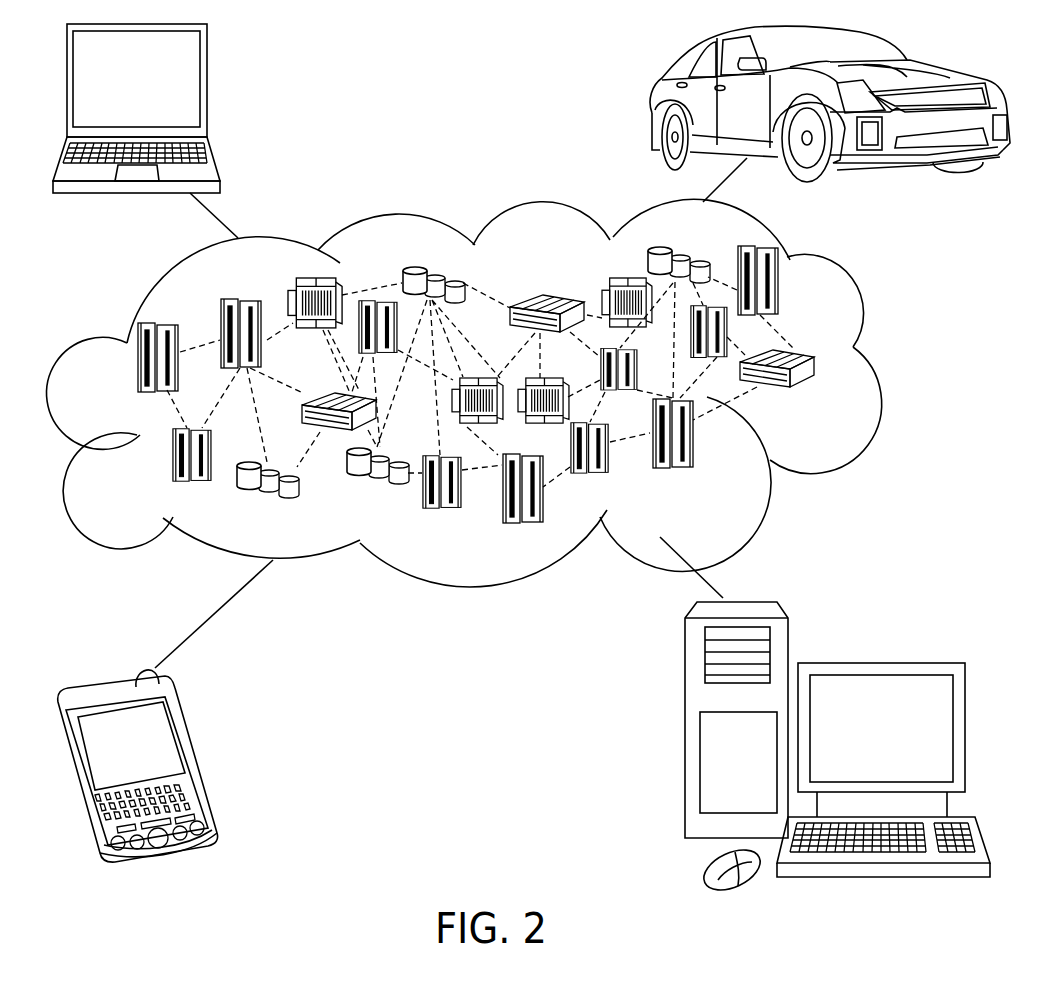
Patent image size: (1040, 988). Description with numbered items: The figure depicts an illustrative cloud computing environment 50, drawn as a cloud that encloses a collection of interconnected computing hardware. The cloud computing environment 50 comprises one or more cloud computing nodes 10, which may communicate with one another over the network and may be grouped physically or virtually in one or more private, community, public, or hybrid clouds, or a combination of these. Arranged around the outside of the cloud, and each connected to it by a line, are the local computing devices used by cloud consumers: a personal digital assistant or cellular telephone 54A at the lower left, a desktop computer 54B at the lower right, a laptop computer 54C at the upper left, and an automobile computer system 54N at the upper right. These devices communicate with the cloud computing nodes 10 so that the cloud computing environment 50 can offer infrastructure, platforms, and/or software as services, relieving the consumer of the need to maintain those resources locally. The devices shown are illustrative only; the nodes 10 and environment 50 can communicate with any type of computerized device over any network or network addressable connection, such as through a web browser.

The cloud computing node 10 is at (830, 396).
The cloud computing environment 50 is at (877, 366).
The personal digital assistant or cellular telephone 54A is at (195, 758).
The desktop computer 54B is at (878, 663).
The laptop computer 54C is at (207, 88).
The automobile computer system 54N is at (655, 104).